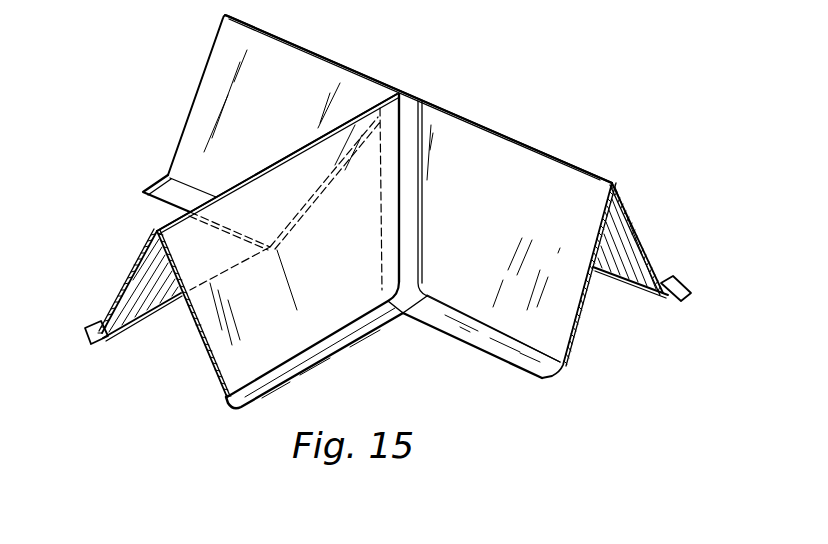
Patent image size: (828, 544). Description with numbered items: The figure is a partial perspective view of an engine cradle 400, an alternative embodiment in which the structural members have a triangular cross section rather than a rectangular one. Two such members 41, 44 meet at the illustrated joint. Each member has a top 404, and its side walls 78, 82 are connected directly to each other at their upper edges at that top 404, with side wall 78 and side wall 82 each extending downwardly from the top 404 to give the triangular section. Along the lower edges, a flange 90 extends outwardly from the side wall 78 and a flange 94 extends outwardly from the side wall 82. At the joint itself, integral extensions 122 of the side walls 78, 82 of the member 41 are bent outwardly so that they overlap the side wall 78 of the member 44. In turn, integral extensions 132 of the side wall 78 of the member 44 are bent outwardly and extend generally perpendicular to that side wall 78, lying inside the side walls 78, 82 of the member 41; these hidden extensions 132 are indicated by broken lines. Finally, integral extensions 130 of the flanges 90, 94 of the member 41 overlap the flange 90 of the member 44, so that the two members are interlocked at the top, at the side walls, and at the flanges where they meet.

The engine cradle 400 is at (527, 78).
The member 41 is at (83, 354).
The member 44 is at (192, 73).
The top 404 is at (331, 56).
The integral extensions 122 is at (378, 96).
The integral extensions 132 is at (320, 183).
The side wall 78 is at (140, 258).
The side wall 82 is at (634, 215).
The flange 90 is at (95, 325).
The flange 94 is at (231, 409).
The integral extensions 130 is at (401, 316).